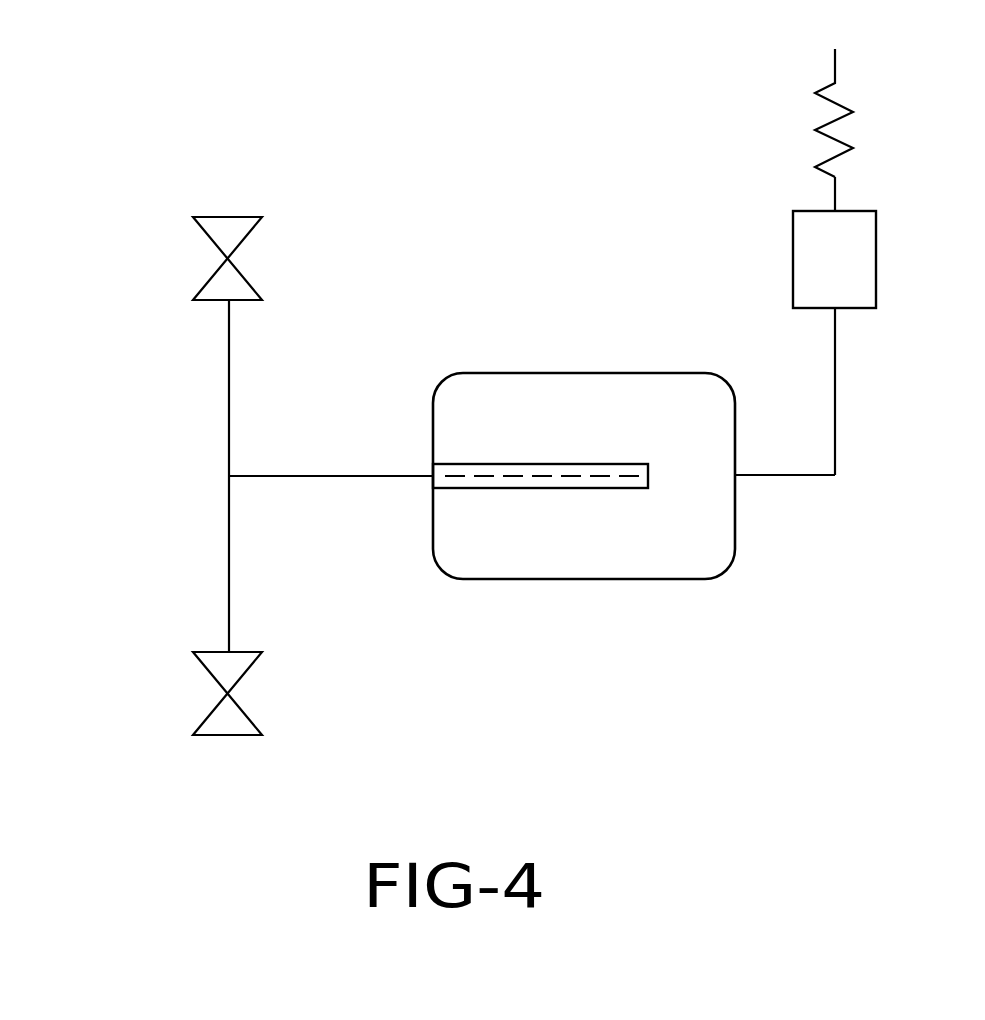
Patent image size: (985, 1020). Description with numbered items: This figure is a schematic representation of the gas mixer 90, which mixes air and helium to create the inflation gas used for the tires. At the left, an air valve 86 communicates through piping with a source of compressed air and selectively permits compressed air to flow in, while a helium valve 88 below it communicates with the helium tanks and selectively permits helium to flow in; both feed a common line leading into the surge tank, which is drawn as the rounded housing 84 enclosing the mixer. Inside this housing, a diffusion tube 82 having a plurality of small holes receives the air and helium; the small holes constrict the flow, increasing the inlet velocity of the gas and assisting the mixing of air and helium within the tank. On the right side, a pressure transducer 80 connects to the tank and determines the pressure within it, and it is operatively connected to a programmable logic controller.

The pressure transducer 80 is at (849, 260).
The diffusion tube 82 is at (565, 483).
The chamber housing 84 is at (612, 388).
The air valve 86 is at (230, 232).
The helium valve 88 is at (232, 716).
The gas mixer 90 is at (541, 322).